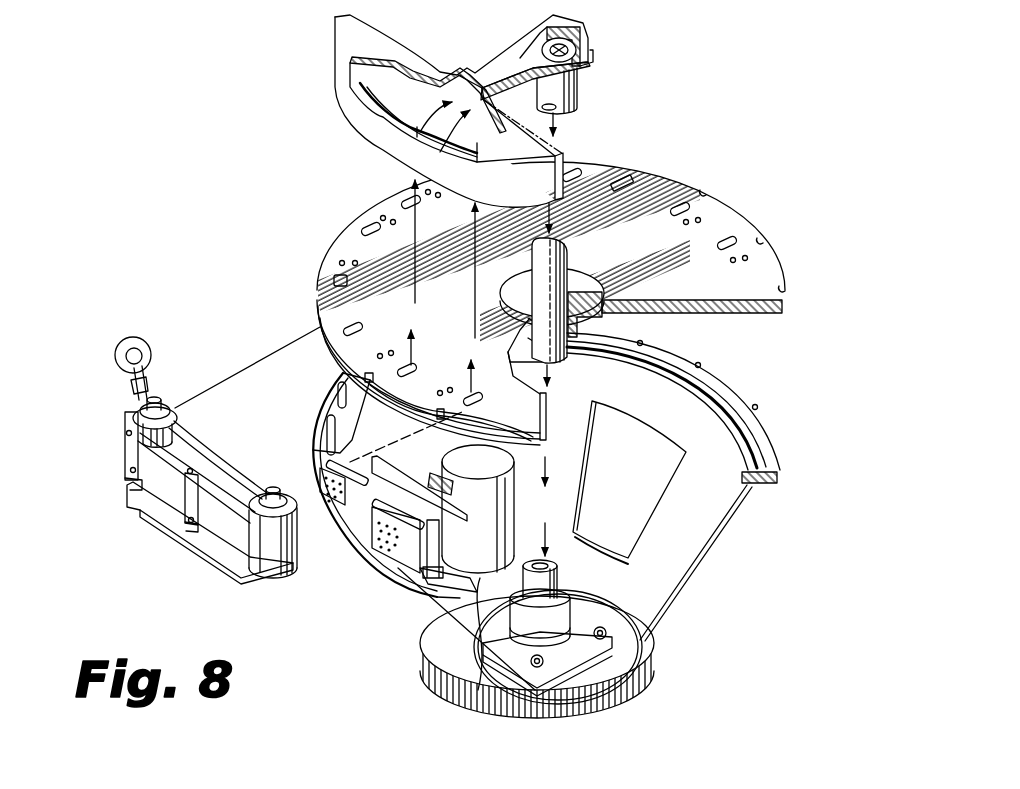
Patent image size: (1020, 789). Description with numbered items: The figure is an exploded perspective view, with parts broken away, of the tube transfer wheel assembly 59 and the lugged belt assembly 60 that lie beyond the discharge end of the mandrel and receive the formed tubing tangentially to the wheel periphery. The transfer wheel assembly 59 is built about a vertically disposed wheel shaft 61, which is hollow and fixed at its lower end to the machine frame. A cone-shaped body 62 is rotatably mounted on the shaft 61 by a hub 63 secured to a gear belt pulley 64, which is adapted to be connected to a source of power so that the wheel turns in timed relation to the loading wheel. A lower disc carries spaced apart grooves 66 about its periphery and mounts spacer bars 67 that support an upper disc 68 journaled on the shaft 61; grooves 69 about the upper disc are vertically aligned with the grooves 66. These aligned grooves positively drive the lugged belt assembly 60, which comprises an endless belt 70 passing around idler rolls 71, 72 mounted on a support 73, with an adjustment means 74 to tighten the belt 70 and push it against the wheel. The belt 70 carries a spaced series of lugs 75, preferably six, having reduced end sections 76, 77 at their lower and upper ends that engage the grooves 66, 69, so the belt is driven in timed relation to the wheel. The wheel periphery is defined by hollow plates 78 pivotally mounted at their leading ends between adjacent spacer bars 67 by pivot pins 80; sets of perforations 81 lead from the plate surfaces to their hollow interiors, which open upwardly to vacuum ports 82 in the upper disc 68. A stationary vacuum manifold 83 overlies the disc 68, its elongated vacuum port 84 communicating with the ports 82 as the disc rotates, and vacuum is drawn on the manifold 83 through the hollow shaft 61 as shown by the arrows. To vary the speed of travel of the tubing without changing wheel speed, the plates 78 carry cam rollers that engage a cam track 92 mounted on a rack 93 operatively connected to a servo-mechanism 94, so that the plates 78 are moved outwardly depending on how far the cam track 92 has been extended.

The tube transfer wheel assembly 59 is at (788, 377).
The lugged belt assembly 60 is at (100, 487).
The wheel shaft 61 is at (572, 262).
The cone-shaped body 62 is at (706, 550).
The hub 63 is at (590, 622).
The gear belt pulley 64 is at (626, 700).
The grooves 66 is at (758, 408).
The spacer bars 67 is at (441, 546).
The upper disc 68 is at (746, 229).
The grooves 69 is at (642, 176).
The endless belt 70 is at (200, 447).
The idler roll 71 is at (163, 404).
The idler roll 72 is at (291, 518).
The support 73 is at (225, 573).
The adjustment means 74 is at (140, 337).
The lugs 75 is at (124, 458).
The reduced end section 76 is at (130, 486).
The reduced end section 77 is at (125, 432).
The plates 78 is at (352, 520).
The pivot pins 80 is at (420, 502).
The perforations 81 is at (322, 486).
The vacuum ports 82 is at (414, 372).
The vacuum manifold 83 is at (400, 52).
The vacuum port 84 is at (392, 115).
The cam track 92 is at (410, 462).
The rack 93 is at (438, 476).
The servo-mechanism 94 is at (515, 504).